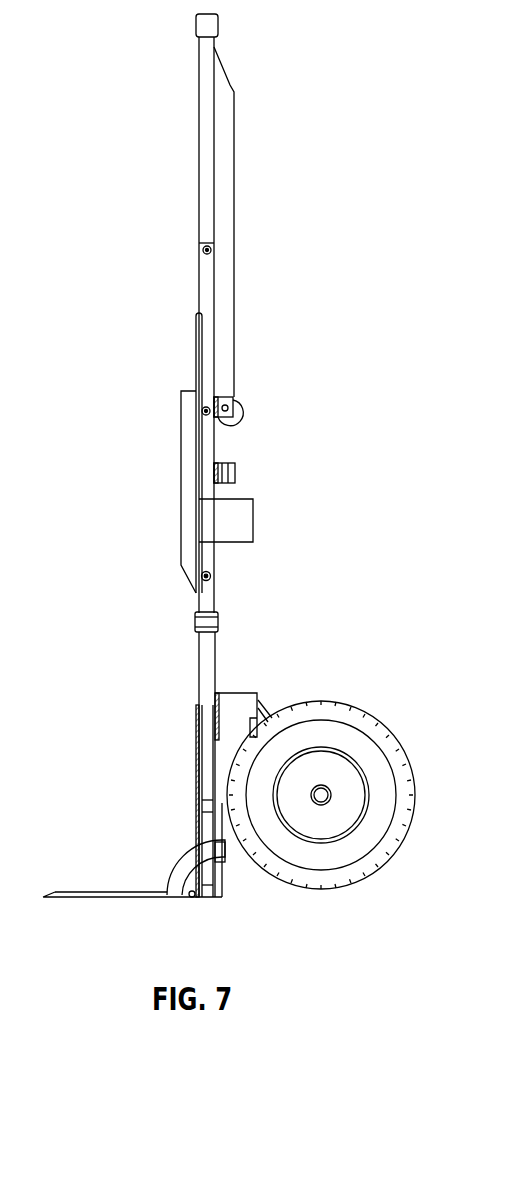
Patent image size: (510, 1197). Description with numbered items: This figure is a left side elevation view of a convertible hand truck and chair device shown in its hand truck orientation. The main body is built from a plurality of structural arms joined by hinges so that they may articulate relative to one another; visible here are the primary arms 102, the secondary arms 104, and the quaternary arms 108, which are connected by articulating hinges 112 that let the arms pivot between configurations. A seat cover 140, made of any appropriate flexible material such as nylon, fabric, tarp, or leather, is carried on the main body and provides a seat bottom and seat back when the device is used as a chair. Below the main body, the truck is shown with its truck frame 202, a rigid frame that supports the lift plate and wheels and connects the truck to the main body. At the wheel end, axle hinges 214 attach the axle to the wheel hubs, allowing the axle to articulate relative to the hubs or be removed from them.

The primary arms 102 is at (205, 678).
The secondary arms 104 is at (205, 828).
The quaternary arms 108 is at (200, 296).
The articulating hinges 112 is at (209, 572).
The seat cover 140 is at (226, 197).
The truck frame 202 is at (235, 708).
The axle hinges 214 is at (223, 898).